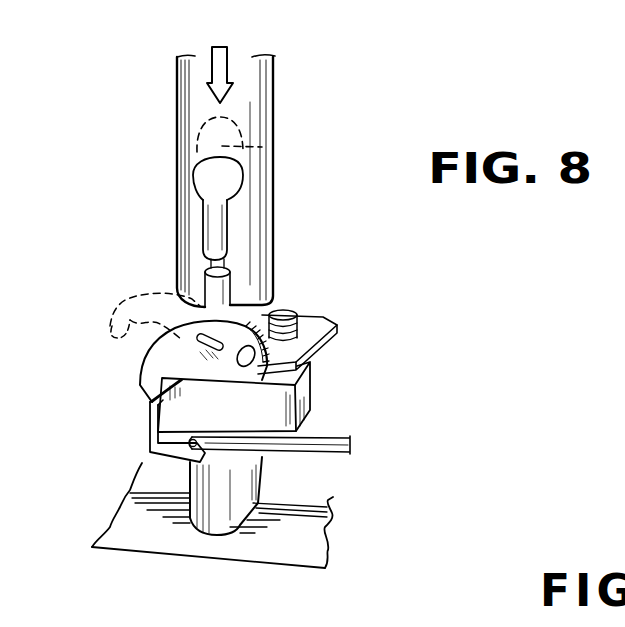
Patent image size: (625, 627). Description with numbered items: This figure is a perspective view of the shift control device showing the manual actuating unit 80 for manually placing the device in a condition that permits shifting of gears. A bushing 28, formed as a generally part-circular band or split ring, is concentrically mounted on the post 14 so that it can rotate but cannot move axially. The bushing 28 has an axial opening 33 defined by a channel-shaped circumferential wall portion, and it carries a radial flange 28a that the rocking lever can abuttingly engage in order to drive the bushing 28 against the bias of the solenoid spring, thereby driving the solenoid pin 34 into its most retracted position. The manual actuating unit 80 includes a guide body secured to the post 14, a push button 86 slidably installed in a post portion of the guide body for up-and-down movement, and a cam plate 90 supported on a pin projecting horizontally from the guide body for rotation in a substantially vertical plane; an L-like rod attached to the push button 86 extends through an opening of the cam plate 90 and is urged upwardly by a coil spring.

The post 14 is at (228, 517).
The bushing 28 is at (302, 397).
The radial flange 28a is at (167, 420).
The axial opening 33 is at (310, 363).
The solenoid pin 34 is at (320, 442).
The manual actuating unit 80 is at (250, 260).
The push button 86 is at (230, 185).
The cam plate 90 is at (140, 381).